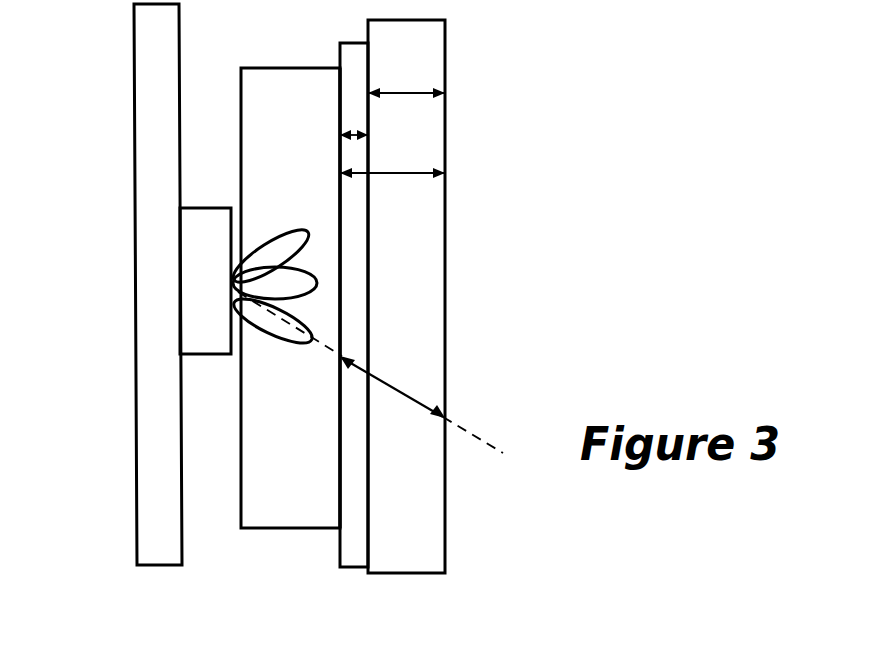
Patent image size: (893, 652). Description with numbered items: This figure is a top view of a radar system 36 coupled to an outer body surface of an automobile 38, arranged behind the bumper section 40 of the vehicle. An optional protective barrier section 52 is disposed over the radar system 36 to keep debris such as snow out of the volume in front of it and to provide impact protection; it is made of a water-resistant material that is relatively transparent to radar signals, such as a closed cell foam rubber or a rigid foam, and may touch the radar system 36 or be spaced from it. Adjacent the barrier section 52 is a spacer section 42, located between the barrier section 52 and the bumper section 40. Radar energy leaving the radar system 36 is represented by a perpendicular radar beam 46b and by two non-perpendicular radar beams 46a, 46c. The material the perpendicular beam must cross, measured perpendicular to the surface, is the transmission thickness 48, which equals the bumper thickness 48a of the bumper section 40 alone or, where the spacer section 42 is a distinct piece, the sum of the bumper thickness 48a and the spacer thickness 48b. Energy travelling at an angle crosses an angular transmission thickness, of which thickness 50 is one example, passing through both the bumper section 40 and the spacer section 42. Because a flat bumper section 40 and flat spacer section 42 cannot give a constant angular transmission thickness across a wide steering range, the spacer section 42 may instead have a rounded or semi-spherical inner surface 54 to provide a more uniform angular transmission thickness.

The radar system 36 is at (197, 343).
The automobile 38 is at (148, 538).
The bumper section 40 is at (427, 532).
The spacer section 42 is at (358, 557).
The non-perpendicular radar beam 46a is at (253, 253).
The perpendicular radar beam 46b is at (231, 282).
The non-perpendicular radar beam 46c is at (236, 308).
The transmission thickness 48 is at (400, 175).
The bumper thickness 48a is at (402, 93).
The spacer thickness 48b is at (354, 135).
The angular transmission thickness 50 is at (403, 393).
The barrier section 52 is at (283, 67).
The inner surface 54 is at (340, 492).